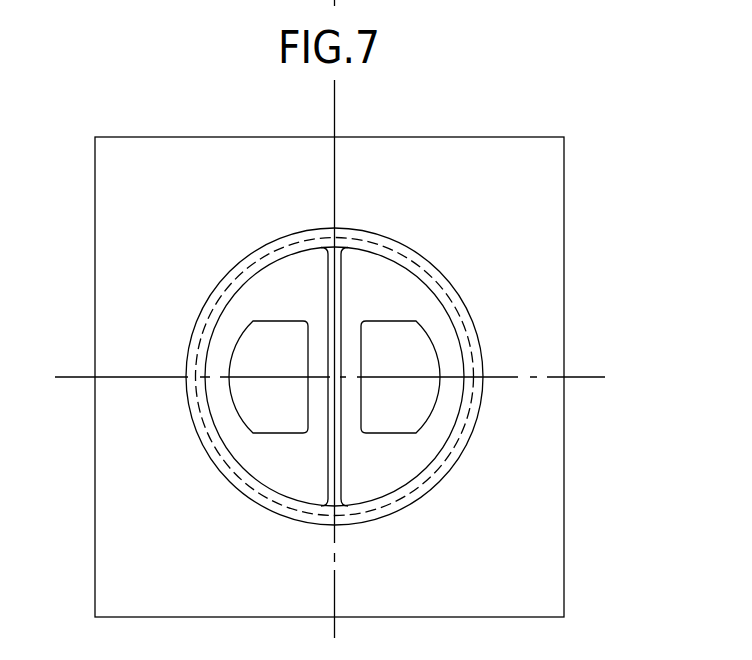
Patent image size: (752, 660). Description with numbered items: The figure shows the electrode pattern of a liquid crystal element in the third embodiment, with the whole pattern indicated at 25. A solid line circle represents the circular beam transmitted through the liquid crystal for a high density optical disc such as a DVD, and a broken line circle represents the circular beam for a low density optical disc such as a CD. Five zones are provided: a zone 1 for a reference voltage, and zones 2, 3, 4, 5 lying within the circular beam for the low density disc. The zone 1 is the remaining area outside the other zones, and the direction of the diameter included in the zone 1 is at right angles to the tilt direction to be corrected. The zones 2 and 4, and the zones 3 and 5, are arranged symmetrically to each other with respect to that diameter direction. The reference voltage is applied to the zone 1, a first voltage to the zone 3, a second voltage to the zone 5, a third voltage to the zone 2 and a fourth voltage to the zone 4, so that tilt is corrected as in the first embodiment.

The zone for reference voltage 1 is at (99, 198).
The zone 2 is at (277, 328).
The zone 3 is at (292, 278).
The zone 4 is at (373, 328).
The zone 5 is at (357, 278).
The sensor element 25 is at (569, 133).